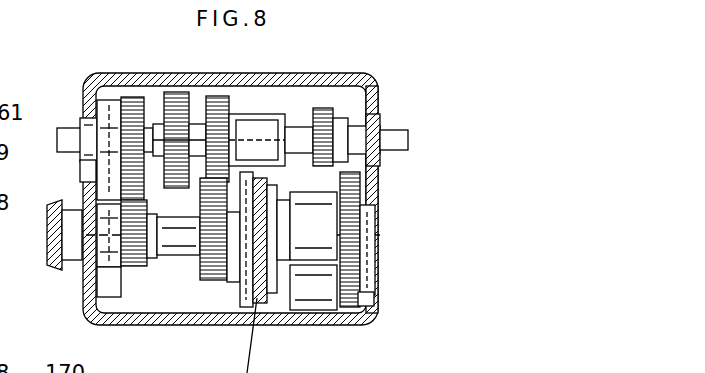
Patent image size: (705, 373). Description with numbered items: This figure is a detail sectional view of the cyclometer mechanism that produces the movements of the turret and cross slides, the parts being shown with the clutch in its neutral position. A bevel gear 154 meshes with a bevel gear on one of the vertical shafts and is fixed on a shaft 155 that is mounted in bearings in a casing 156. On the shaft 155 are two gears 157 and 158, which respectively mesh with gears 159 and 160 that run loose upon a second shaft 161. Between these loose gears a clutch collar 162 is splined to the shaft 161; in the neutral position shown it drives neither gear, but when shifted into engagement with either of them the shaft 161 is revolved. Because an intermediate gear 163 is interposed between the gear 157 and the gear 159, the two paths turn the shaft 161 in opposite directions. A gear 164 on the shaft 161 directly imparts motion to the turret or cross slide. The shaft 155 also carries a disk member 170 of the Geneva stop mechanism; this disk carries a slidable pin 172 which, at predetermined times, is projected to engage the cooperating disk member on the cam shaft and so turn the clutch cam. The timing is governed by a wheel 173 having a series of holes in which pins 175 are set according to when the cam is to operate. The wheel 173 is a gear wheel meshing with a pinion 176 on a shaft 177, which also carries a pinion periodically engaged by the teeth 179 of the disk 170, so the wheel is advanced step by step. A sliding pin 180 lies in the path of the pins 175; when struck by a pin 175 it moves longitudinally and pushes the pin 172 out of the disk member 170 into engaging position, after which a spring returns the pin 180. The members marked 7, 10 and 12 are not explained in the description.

The sleeve member 7 is at (112, 100).
The housing cover 10 is at (360, 122).
The sleeve 12 is at (289, 86).
The bevel gear 154 is at (46, 233).
The shaft 155 is at (179, 250).
The casing 156 is at (88, 301).
The gear 157 is at (113, 268).
The gear 158 is at (213, 272).
The gear 159 is at (134, 108).
The gear 160 is at (224, 104).
The shaft 161 is at (67, 126).
The clutch collar 162 is at (178, 112).
The intermediate gear 163 is at (84, 181).
The gear 164 is at (334, 116).
The disk member 170 is at (268, 206).
The slidable pin 172 is at (231, 280).
The wheel 173 is at (372, 210).
The pin 175 is at (277, 262).
The pinion 176 is at (370, 302).
The shaft 177 is at (280, 286).
The teeth 179 is at (276, 228).
The sliding pin 180 is at (378, 243).